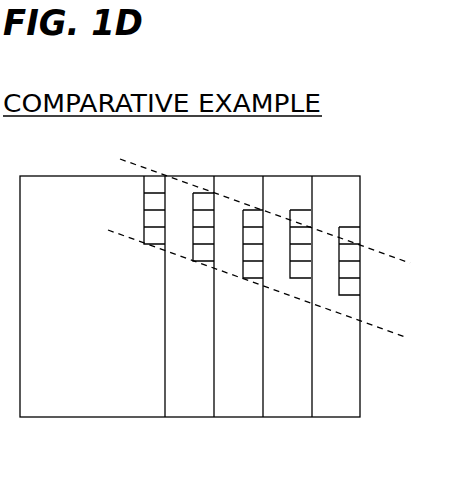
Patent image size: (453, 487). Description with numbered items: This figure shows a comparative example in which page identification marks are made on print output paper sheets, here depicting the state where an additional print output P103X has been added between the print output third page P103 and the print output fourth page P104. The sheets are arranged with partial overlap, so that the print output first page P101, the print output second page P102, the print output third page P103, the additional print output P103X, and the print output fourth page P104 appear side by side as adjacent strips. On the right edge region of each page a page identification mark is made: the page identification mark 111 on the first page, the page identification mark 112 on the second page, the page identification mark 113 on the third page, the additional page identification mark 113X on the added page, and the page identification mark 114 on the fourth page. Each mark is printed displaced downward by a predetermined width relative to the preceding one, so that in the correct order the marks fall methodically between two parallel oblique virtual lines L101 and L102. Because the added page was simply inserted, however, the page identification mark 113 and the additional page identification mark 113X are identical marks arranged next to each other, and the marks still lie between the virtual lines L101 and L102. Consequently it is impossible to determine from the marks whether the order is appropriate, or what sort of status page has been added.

The print output first page P101 is at (35, 174).
The print output second page P102 is at (192, 174).
The print output third page P103 is at (237, 174).
The additional print output P103X is at (288, 174).
The print output fourth page P104 is at (340, 174).
The page identification mark 111 is at (158, 246).
The page identification mark 112 is at (207, 263).
The page identification mark 113 is at (256, 280).
The additional page identification mark 113X is at (303, 280).
The page identification mark 114 is at (349, 297).
The virtual line L101 is at (371, 250).
The virtual line L102 is at (371, 328).